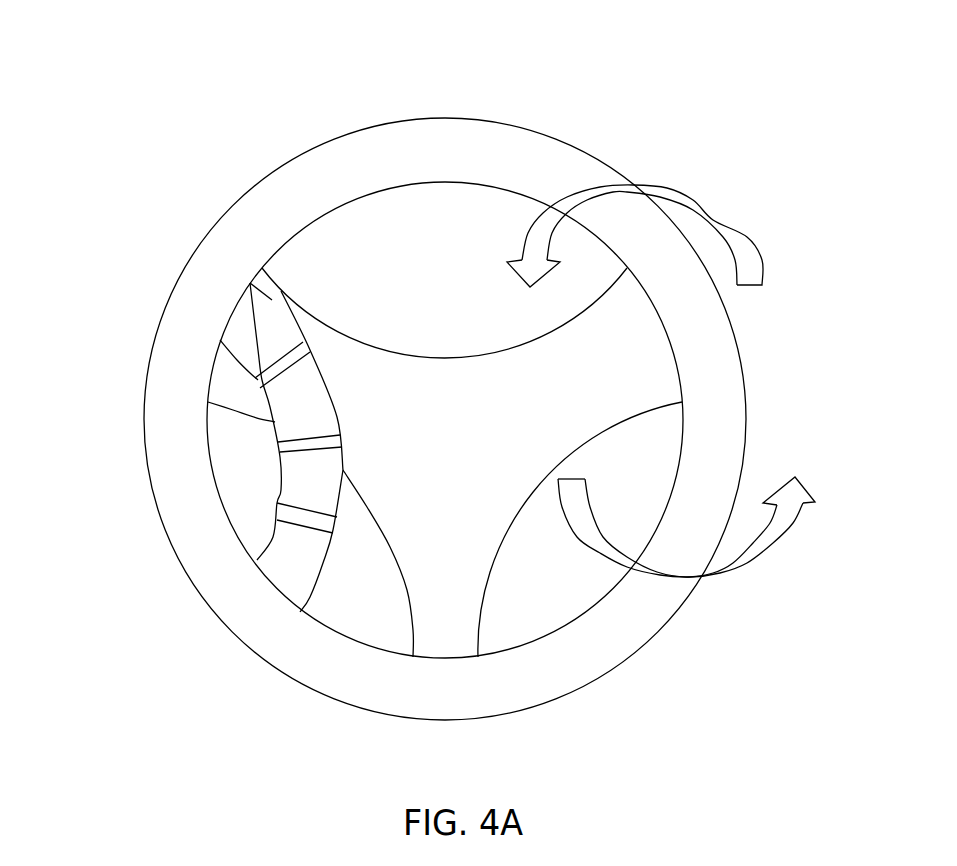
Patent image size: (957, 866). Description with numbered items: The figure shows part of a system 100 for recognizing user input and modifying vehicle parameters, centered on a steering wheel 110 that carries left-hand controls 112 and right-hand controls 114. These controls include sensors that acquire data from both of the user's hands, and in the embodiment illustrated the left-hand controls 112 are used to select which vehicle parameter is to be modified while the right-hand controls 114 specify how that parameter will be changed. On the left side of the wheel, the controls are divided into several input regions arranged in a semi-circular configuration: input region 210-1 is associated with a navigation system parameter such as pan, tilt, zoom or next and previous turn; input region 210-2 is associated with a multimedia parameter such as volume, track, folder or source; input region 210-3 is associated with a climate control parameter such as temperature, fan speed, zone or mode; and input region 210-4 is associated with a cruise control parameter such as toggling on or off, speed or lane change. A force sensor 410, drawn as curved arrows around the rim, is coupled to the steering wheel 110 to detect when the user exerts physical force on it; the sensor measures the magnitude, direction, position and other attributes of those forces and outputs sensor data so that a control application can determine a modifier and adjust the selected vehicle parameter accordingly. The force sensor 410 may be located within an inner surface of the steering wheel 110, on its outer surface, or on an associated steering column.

The system 100 is at (690, 84).
The steering wheel 110 is at (443, 118).
The left-hand controls 112 is at (333, 605).
The right-hand controls 114 is at (658, 656).
The input region 210-1 is at (277, 287).
The input region 210-2 is at (327, 402).
The input region 210-3 is at (280, 478).
The input region 210-4 is at (282, 577).
The force sensor 410 is at (762, 361).